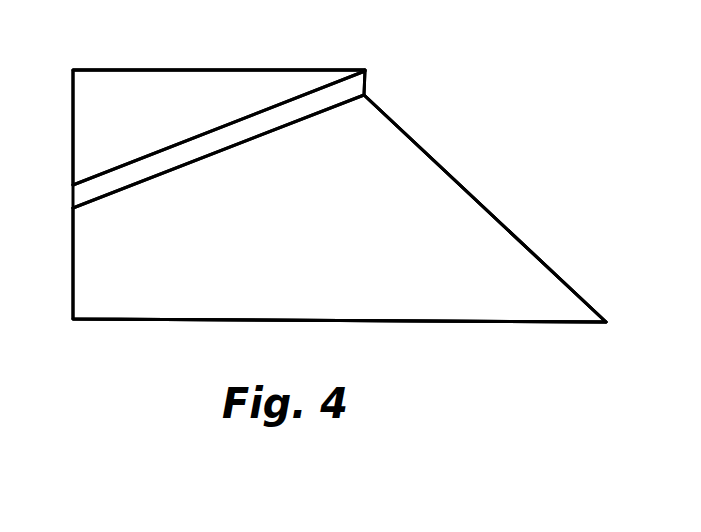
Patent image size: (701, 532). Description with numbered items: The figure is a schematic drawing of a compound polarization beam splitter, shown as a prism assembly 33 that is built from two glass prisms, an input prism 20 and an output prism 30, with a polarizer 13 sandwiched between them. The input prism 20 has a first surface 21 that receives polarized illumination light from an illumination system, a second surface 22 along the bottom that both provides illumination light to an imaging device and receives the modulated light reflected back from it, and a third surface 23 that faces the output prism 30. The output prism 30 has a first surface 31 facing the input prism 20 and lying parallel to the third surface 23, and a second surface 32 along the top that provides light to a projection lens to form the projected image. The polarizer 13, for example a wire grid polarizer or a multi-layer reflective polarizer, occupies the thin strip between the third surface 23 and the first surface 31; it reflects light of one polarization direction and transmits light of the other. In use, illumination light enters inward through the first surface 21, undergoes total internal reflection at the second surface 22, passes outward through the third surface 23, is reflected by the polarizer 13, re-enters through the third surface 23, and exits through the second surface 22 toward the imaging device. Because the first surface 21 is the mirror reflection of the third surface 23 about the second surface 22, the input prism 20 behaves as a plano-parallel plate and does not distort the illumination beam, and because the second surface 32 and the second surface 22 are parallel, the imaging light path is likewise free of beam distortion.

The prism assembly 33 is at (418, 46).
The input prism 20 is at (320, 247).
The output prism 30 is at (112, 129).
The polarizer 13 is at (84, 194).
The first surface of the output prism 31 is at (255, 117).
The third surface of the input prism 23 is at (169, 176).
The second surface of the output prism 32 is at (290, 69).
The first surface of the input prism 21 is at (419, 144).
The second surface of the input prism 22 is at (290, 323).